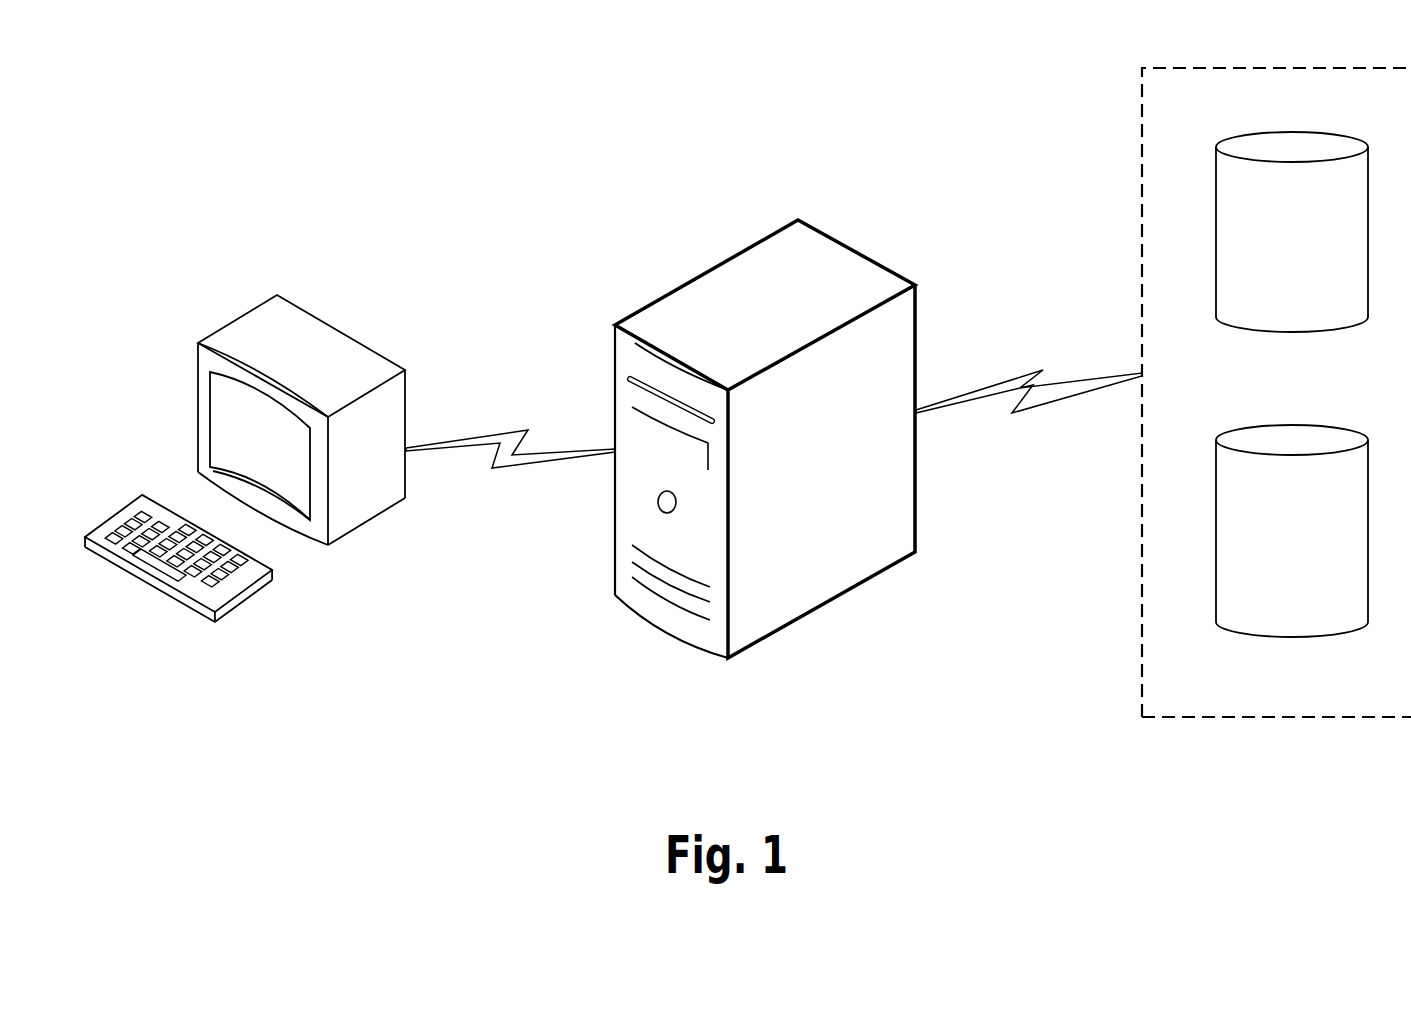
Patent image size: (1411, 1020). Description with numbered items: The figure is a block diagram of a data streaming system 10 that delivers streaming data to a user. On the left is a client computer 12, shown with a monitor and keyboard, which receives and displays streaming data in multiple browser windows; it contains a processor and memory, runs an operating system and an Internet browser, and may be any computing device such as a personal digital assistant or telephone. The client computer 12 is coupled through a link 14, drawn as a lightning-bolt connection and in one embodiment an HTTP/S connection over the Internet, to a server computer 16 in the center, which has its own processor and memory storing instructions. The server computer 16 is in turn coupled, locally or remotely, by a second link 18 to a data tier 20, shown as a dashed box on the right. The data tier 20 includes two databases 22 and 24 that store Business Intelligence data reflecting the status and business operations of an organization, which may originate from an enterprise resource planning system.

The data streaming system 10 is at (463, 163).
The client computer 12 is at (349, 523).
The link 14 is at (510, 458).
The server computer 16 is at (802, 592).
The link 18 is at (1028, 387).
The data tier 20 is at (1372, 694).
The database 22 is at (1277, 311).
The database 24 is at (1277, 594).